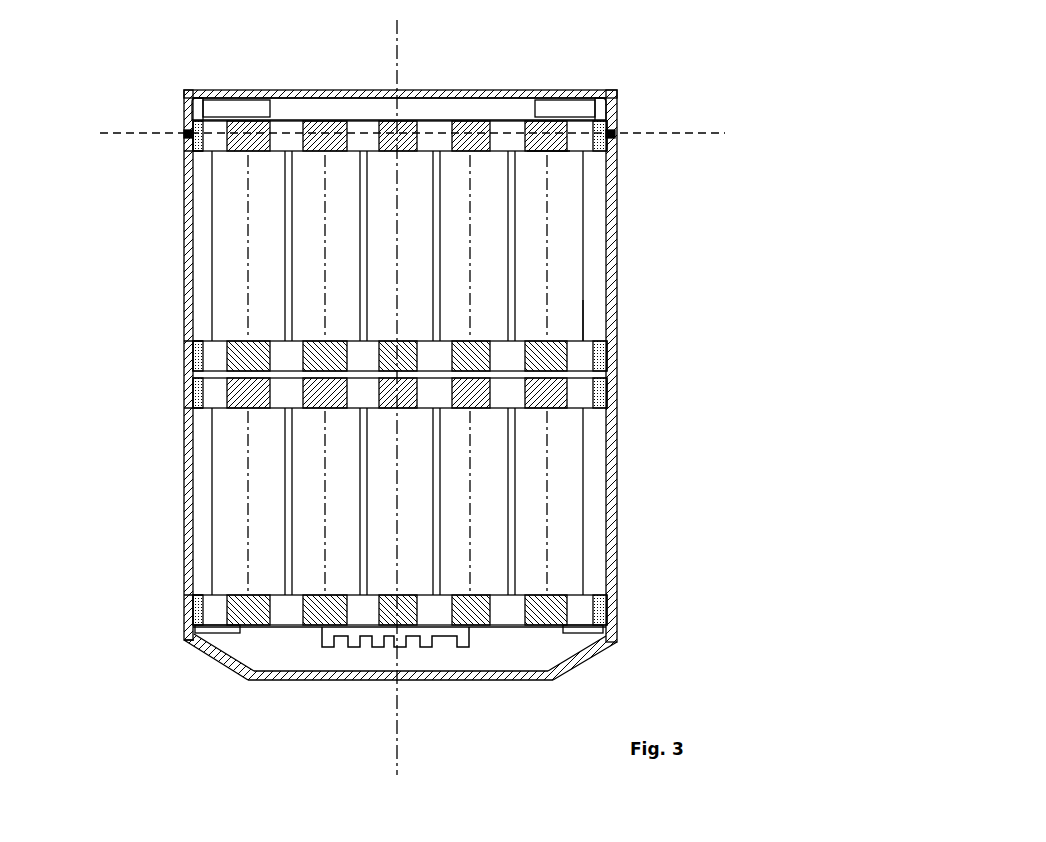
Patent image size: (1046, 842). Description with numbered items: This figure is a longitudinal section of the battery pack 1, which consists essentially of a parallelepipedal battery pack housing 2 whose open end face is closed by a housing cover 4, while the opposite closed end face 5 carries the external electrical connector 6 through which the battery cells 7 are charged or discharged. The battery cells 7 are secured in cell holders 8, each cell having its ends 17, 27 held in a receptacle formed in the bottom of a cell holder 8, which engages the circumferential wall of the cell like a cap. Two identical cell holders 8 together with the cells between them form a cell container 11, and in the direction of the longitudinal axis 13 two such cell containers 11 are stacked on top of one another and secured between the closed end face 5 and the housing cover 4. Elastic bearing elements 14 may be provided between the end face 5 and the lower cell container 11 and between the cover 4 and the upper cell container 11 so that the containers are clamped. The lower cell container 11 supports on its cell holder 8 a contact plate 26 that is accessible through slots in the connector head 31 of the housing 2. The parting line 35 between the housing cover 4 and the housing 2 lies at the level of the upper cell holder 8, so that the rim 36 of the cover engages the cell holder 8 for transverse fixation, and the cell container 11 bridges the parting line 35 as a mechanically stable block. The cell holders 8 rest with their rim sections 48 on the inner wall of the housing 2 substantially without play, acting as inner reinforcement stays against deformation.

The battery pack 1 is at (663, 107).
The battery pack housing 2 is at (617, 453).
The housing cover 4 is at (243, 93).
The end face 5 is at (205, 642).
The external electrical connector 6 is at (475, 658).
The battery cell 7 is at (573, 253).
The cell holder 8 is at (187, 153).
The cell container 11 is at (227, 230).
The longitudinal axis 13 is at (395, 45).
The elastic bearing element 14 is at (557, 105).
The end of battery cell 17 is at (550, 153).
The contact plate 26 is at (360, 645).
The end of battery cell 27 is at (553, 325).
The connector head 31 is at (445, 686).
The parting line 35 is at (112, 135).
The rim of housing cover 36 is at (190, 117).
The rim section 48 is at (607, 145).